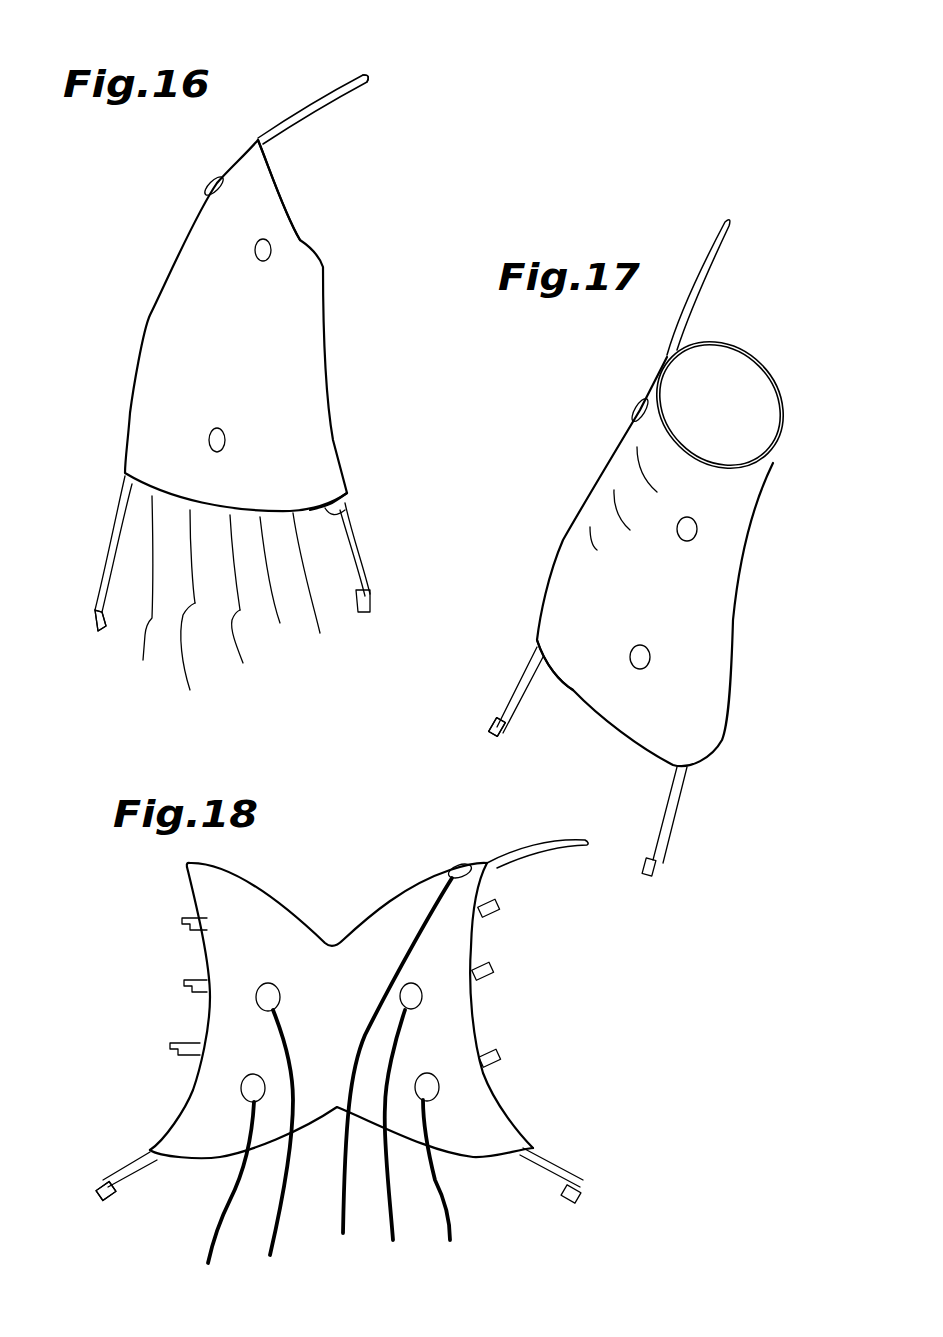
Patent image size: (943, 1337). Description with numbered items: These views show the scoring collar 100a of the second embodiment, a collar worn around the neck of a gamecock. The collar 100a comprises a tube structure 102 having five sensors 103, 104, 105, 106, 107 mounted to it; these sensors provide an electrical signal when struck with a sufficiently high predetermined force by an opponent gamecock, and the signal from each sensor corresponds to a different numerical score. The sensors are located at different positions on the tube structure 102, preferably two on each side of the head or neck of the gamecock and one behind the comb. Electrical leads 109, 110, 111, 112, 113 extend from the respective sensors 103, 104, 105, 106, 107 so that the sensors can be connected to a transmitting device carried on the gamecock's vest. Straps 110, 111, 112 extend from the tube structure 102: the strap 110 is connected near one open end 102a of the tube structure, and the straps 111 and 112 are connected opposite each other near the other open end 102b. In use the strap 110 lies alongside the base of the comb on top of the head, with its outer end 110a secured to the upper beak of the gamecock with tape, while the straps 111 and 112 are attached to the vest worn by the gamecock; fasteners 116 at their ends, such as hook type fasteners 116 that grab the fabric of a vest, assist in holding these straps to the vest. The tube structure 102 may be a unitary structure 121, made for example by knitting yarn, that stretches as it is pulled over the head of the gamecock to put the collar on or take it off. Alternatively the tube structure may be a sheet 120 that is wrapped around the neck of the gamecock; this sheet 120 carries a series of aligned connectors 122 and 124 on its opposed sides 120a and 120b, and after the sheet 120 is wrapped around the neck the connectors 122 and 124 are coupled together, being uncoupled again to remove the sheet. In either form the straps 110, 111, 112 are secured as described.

In FIG. 16, the collar 100a is at (130, 350).
In FIG. 16, the tube structure 102 is at (303, 350).
In FIG. 17, the tube structure 102 is at (720, 603).
In FIG. 16, the open end of tube structure 102a is at (278, 196).
In FIG. 17, the open end of tube structure 102a is at (735, 343).
In FIG. 16, the other open end of tube structure 102b is at (350, 513).
In FIG. 17, the other open end of tube structure 102b is at (578, 707).
In FIG. 16, the sensor 103 is at (208, 180).
In FIG. 17, the sensor 103 is at (634, 403).
In FIG. 18, the sensor 103 is at (458, 860).
In FIG. 16, the sensor 104 is at (272, 250).
In FIG. 17, the sensor 104 is at (698, 534).
In FIG. 18, the sensor 104 is at (423, 993).
In FIG. 16, the sensor 105 is at (226, 440).
In FIG. 17, the sensor 105 is at (648, 663).
In FIG. 18, the sensor 105 is at (440, 1085).
In FIG. 18, the sensor 106 is at (257, 997).
In FIG. 18, the sensor 107 is at (241, 1087).
In FIG. 16, the electrical lead 109 is at (138, 596).
In FIG. 18, the electrical lead 109 is at (210, 1240).
In FIG. 16, the strap 110 is at (303, 103).
In FIG. 17, the strap 110 is at (713, 240).
In FIG. 18, the strap 110 is at (545, 840).
In FIG. 16, the outer end of strap 110a is at (370, 77).
In FIG. 16, the strap 111 is at (113, 537).
In FIG. 17, the strap 111 is at (513, 680).
In FIG. 18, the strap 111 is at (123, 1167).
In FIG. 16, the strap 112 is at (372, 566).
In FIG. 17, the strap 112 is at (682, 807).
In FIG. 18, the strap 112 is at (557, 1167).
In FIG. 18, the electrical lead 113 is at (452, 1230).
In FIG. 16, the fastener 116 is at (100, 630).
In FIG. 17, the fastener 116 is at (485, 725).
In FIG. 18, the fastener 116 is at (100, 1198).
In FIG. 18, the sheet 120 is at (486, 1133).
In FIG. 18, the side of sheet 120a is at (207, 957).
In FIG. 18, the side of sheet 120b is at (476, 946).
In FIG. 17, the unitary tube structure 121 is at (770, 498).
In FIG. 18, the connector 122 is at (180, 922).
In FIG. 18, the connector 124 is at (500, 905).